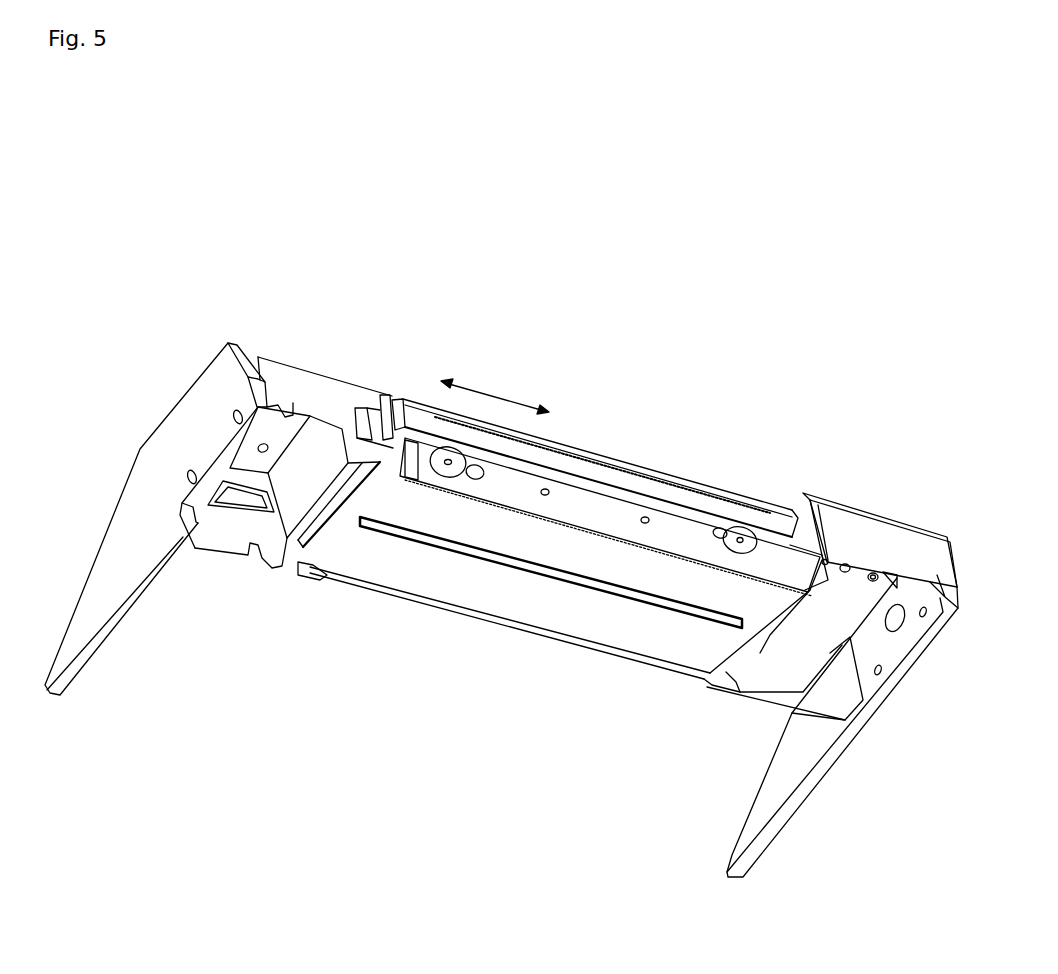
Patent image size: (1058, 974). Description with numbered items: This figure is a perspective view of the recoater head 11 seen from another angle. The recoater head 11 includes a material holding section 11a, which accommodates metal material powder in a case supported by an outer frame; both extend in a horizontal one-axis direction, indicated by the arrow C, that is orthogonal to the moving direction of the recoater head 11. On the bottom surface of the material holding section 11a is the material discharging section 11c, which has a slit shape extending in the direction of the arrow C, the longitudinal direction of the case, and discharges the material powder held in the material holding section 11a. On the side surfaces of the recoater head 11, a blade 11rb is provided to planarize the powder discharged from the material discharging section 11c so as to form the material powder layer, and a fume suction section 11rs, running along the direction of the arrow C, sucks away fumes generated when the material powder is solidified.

The recoater head 11 is at (420, 312).
The blade 11rb is at (585, 500).
The fume suction section 11rs is at (712, 490).
The material holding section 11a is at (456, 582).
The material discharging section 11c is at (603, 590).